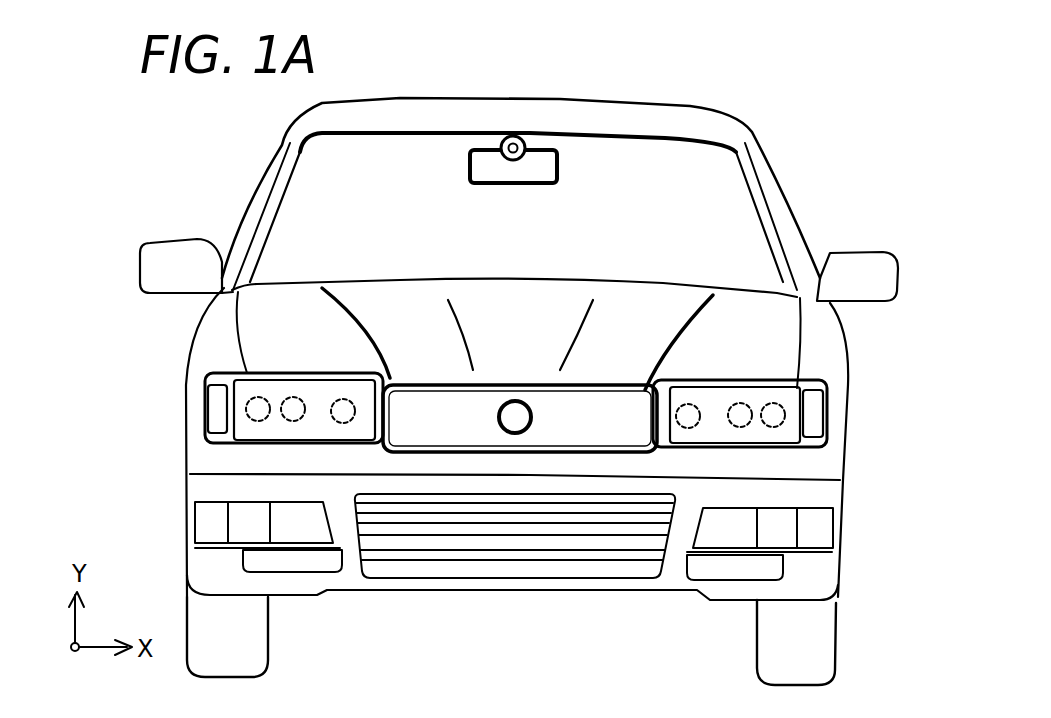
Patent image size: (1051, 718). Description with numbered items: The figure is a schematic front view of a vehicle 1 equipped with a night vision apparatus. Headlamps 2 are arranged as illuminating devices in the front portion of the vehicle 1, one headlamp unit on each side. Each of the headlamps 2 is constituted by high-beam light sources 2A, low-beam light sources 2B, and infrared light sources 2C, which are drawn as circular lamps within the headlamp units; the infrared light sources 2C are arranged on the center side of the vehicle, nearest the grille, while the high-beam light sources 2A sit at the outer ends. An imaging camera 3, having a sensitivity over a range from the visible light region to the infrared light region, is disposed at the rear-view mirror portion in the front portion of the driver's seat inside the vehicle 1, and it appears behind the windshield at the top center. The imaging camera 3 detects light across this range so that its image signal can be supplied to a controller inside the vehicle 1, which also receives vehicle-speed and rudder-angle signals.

The vehicle 1 is at (788, 138).
The headlamps 2 is at (388, 226).
The high-beam light sources 2A is at (262, 394).
The low-beam light sources 2B is at (296, 396).
The infrared light sources 2C is at (345, 398).
The imaging camera 3 is at (513, 137).